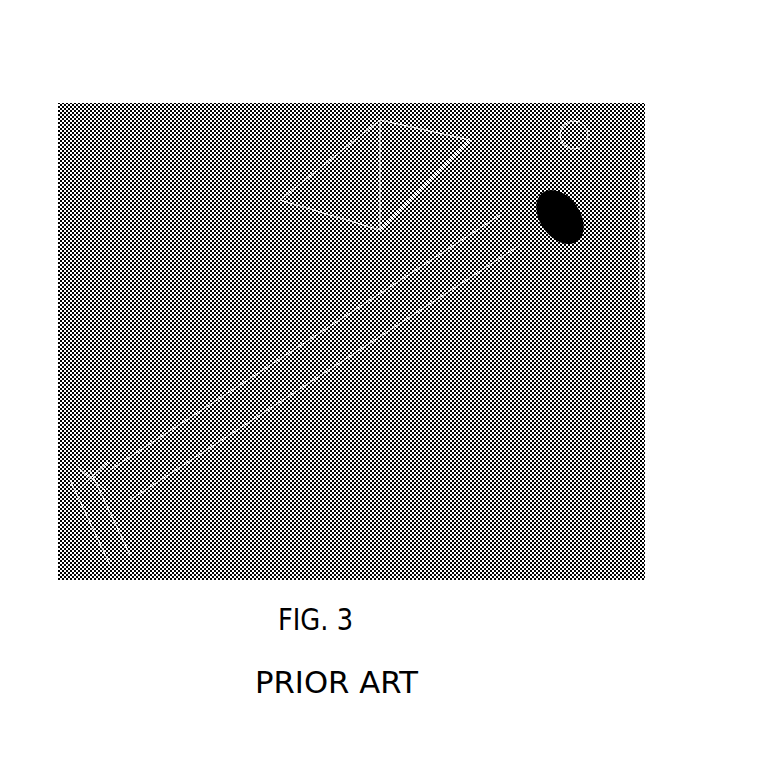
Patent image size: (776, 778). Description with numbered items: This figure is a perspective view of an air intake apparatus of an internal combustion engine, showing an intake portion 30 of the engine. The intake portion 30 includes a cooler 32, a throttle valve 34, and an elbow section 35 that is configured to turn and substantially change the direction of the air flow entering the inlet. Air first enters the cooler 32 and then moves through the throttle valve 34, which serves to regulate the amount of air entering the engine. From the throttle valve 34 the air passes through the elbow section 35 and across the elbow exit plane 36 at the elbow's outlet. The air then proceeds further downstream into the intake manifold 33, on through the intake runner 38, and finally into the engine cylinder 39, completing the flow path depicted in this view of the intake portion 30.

The intake portion 30 is at (196, 125).
The cooler 32 is at (350, 170).
The intake manifold 33 is at (266, 386).
The throttle valve 34 is at (574, 128).
The elbow section 35 is at (647, 155).
The elbow exit plane 36 is at (563, 248).
The intake runner 38 is at (117, 435).
The engine cylinder 39 is at (113, 537).